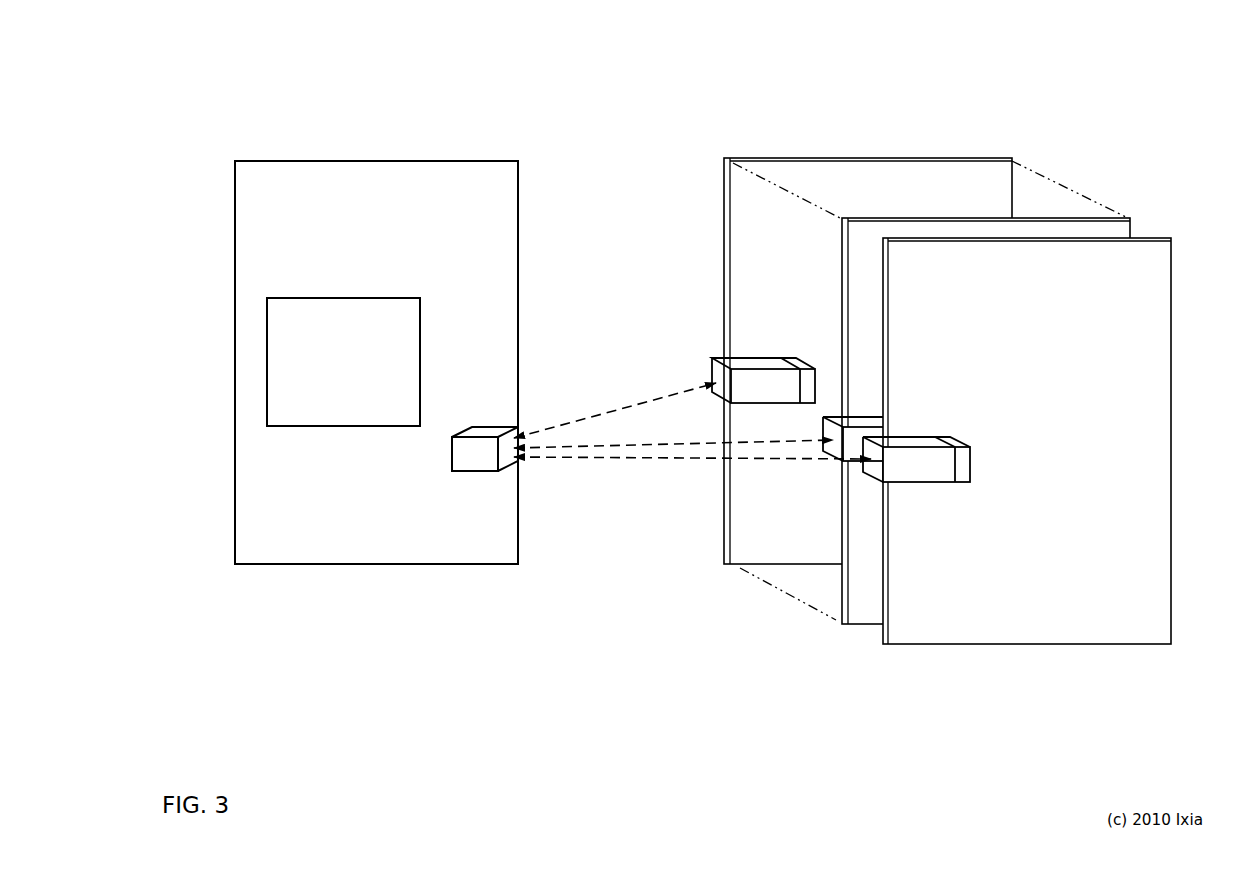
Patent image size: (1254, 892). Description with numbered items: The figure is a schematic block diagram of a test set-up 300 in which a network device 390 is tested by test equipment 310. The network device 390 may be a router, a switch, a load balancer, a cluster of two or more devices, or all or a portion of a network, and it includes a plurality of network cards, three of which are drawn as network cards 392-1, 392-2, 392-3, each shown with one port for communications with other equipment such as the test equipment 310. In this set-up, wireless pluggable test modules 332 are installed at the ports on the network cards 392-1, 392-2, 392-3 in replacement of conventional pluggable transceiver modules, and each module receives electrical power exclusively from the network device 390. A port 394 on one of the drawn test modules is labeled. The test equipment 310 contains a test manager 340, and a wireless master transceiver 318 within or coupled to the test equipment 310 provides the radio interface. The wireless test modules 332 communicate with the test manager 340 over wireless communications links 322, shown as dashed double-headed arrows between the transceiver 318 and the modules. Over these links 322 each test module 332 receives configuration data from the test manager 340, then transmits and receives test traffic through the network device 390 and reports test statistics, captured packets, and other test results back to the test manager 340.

The test set-up 300 is at (203, 42).
The test equipment 310 is at (376, 362).
The test manager 340 is at (343, 362).
The wireless master transceiver 318 is at (470, 473).
The wireless communications links 322 is at (708, 458).
The network device 390 is at (1187, 146).
The network card 392-1 is at (757, 565).
The network card 392-2 is at (860, 626).
The network card 392-3 is at (1012, 646).
The wireless pluggable test module 332 is at (965, 505).
The port 394 is at (960, 484).